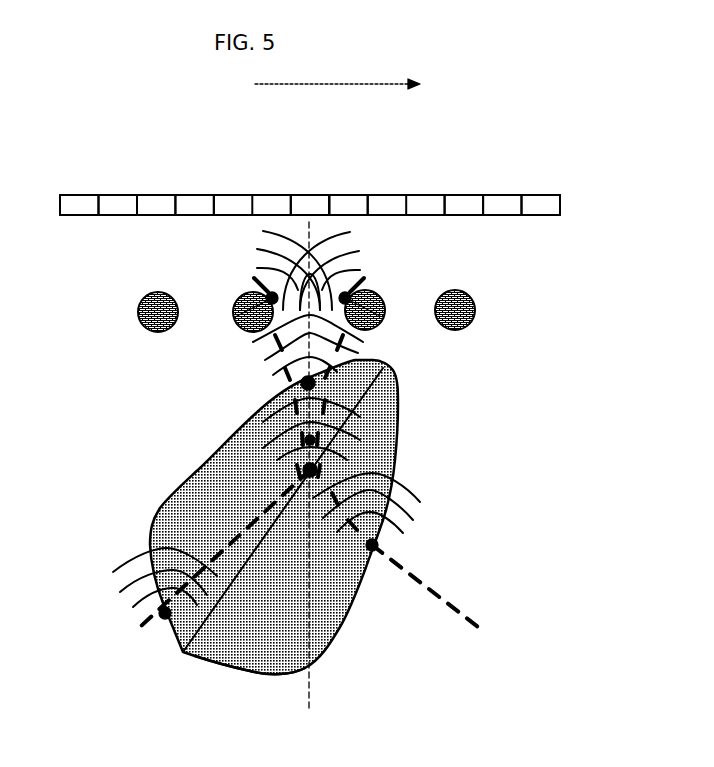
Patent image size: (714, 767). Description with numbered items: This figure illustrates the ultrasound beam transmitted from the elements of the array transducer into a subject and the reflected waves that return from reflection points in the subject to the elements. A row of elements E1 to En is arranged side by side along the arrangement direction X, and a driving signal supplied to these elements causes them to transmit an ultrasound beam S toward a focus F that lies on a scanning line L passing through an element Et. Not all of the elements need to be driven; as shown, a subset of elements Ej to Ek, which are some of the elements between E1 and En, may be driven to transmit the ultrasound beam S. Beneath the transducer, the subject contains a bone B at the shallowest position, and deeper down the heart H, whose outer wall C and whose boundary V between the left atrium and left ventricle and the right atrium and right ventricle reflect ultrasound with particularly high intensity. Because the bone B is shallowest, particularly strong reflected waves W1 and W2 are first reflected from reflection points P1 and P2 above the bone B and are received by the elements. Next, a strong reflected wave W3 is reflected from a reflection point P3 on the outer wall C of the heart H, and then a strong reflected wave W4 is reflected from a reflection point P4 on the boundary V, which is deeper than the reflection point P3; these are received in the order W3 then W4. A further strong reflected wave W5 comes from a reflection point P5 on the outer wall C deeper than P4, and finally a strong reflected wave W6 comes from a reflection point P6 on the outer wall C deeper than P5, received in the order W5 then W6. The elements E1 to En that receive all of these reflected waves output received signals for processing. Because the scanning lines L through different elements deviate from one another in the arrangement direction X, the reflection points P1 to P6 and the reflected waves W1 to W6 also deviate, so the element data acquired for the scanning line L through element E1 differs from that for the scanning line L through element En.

The arrangement direction X is at (351, 85).
The element E1 is at (79, 186).
The element Ej is at (195, 195).
The element Et is at (311, 195).
The element Ek is at (462, 195).
The element En is at (541, 186).
The bone B is at (148, 328).
The reflected wave W1 is at (258, 249).
The reflected wave W2 is at (360, 251).
The reflected wave W3 is at (265, 360).
The reflected wave W4 is at (343, 410).
The reflected wave W5 is at (413, 493).
The reflected wave W6 is at (122, 568).
The reflection point P1 is at (235, 312).
The reflection point P2 is at (385, 312).
The reflection point P3 is at (303, 382).
The reflection point P4 is at (303, 470).
The reflection point P5 is at (377, 547).
The reflection point P6 is at (163, 618).
The focus F is at (320, 438).
The heart H is at (178, 518).
The scanning line L is at (315, 622).
The ultrasound beam S is at (447, 617).
The boundary V is at (200, 633).
The outer wall C is at (268, 675).